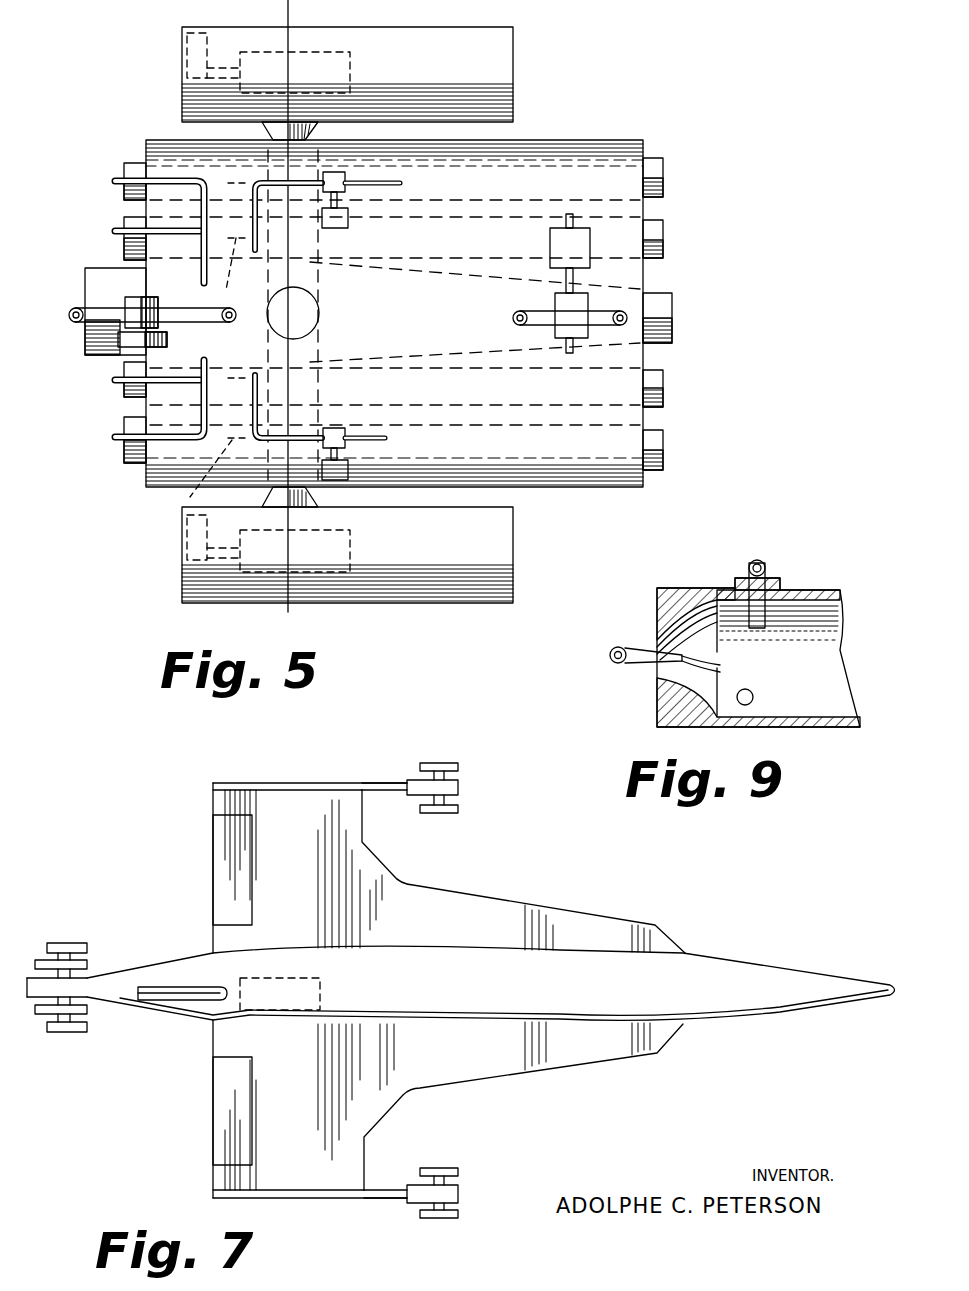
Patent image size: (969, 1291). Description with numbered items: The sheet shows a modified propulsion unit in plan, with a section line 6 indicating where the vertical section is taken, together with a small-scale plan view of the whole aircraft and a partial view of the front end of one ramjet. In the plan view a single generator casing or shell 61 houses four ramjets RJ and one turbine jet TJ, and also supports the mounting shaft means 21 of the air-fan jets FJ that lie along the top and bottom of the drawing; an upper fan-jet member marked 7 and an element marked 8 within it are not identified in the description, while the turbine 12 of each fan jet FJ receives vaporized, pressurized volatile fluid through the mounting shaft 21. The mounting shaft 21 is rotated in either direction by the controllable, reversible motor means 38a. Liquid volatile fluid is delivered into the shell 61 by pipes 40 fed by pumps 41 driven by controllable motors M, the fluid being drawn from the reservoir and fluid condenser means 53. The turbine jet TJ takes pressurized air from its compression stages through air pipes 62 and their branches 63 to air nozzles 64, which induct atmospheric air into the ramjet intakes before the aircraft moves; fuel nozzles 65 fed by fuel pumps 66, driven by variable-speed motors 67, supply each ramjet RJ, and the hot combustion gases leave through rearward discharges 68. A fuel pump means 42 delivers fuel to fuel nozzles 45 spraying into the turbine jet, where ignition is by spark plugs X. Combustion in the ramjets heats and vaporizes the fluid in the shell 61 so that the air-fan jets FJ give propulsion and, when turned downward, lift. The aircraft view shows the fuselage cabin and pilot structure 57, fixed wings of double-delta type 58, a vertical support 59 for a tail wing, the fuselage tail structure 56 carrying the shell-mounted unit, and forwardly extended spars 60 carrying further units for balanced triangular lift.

In FIG. 5, the section line 6 is at (294, 13).
In FIG. 5, the upper hull section 7 is at (182, 68).
In FIG. 5, the inner compartment 8 is at (207, 40).
In FIG. 5, the turbine 12 is at (350, 52).
In FIG. 5, the mounting shaft means 21 is at (318, 380).
In FIG. 5, the motor means 38a is at (305, 323).
In FIG. 5, the pipes 40 is at (515, 320).
In FIG. 5, the pumps 41 is at (560, 303).
In FIG. 5, the fuel pump means 42 is at (135, 310).
In FIG. 5, the fuel nozzles 45 is at (225, 308).
In FIG. 7, the fluid condenser means 53 is at (320, 980).
In FIG. 7, the fuselage tail structure 56 is at (30, 990).
In FIG. 7, the fuselage cabin and pilot structure 57 is at (685, 980).
In FIG. 7, the fixed wings of double-delta type 58 is at (502, 898).
In FIG. 7, the vertical support 59 is at (165, 985).
In FIG. 7, the forwardly extended spars 60 is at (385, 783).
In FIG. 5, the generator casing or shell 61 is at (530, 140).
In FIG. 5, the air pipes 62 is at (204, 272).
In FIG. 5, the branches 63 is at (115, 181).
In FIG. 9, the branches 63 is at (614, 662).
In FIG. 9, the air nozzles 64 is at (720, 668).
In FIG. 5, the fuel nozzles 65 is at (228, 350).
In FIG. 9, the fuel nozzles 65 is at (762, 628).
In FIG. 5, the fuel pumps 66 is at (345, 188).
In FIG. 5, the motors 67 is at (340, 222).
In FIG. 5, the rearward discharges 68 is at (663, 232).
In FIG. 5, the motor means M is at (575, 248).
In FIG. 9, the spark plugs X is at (753, 699).
In FIG. 5, the air-fan jets FJ is at (513, 45).
In FIG. 7, the air-fan jets FJ is at (458, 766).
In FIG. 5, the ramjets RJ is at (124, 170).
In FIG. 9, the ramjets RJ is at (825, 590).
In FIG. 5, the turbine jet TJ is at (85, 340).
In FIG. 7, the turbine jet TJ is at (458, 788).